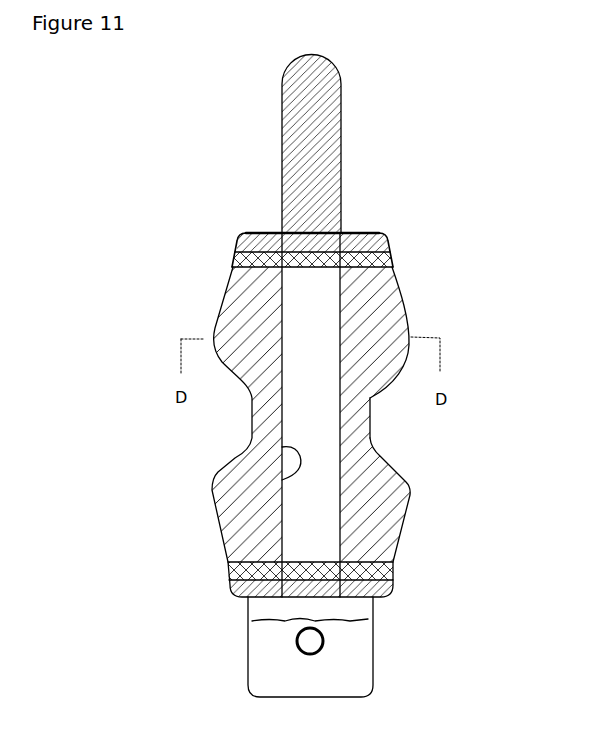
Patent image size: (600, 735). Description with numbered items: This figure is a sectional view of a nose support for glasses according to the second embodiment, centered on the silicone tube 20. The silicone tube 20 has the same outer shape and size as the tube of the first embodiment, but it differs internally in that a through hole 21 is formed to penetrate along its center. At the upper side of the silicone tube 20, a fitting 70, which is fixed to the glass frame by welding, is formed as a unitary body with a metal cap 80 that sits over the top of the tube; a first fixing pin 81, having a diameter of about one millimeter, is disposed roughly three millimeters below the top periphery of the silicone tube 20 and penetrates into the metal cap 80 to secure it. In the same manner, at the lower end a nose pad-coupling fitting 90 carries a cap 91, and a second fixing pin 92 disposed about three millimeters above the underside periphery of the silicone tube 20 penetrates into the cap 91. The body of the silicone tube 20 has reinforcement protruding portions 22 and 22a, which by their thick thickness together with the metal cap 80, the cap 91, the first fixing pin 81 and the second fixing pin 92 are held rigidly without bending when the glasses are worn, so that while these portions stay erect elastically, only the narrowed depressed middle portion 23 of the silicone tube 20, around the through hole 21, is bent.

The fitting 70 is at (342, 113).
The metal cap 80 is at (370, 231).
The first fixing pin 81 is at (393, 253).
The silicone tube 20 is at (190, 313).
The through hole 21 is at (290, 478).
The reinforcement protruding portion 22 is at (411, 337).
The waist portion 23 is at (372, 418).
The reinforcement protruding portion 22a is at (410, 490).
The cap 91 is at (227, 562).
The second fixing pin 92 is at (394, 578).
The nose pad-coupling fitting 90 is at (373, 665).